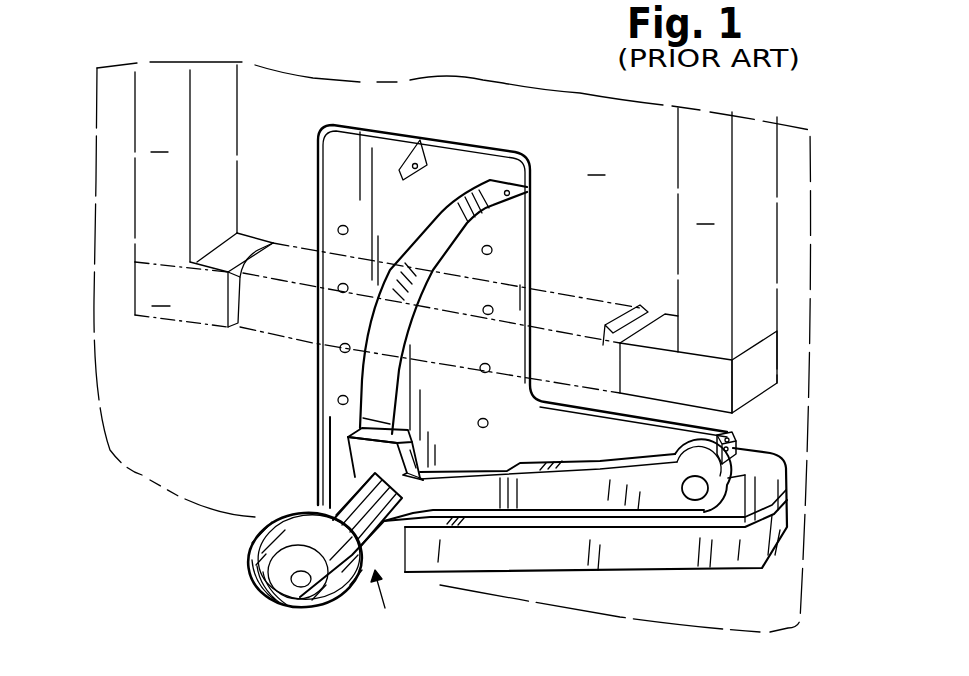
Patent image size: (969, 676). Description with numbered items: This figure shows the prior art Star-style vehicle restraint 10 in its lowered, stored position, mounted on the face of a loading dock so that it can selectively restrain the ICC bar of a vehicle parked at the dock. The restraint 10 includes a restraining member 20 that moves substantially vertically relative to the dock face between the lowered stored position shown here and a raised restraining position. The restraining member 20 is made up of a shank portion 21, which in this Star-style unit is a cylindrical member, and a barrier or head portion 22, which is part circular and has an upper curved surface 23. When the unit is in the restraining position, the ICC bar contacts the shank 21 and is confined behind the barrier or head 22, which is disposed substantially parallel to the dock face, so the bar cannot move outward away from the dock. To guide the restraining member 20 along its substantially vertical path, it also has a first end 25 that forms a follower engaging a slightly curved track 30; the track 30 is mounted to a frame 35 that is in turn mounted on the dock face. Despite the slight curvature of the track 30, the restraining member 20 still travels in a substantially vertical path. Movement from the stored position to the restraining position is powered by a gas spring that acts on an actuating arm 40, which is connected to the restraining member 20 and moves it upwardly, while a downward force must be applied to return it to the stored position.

The restraint 10 is at (176, 374).
The restraining member 20 is at (379, 604).
The shank portion 21 is at (385, 505).
The barrier or head portion 22 is at (258, 568).
The upper curved surface 23 is at (310, 527).
The first end 25 is at (420, 462).
The track 30 is at (497, 182).
The frame 35 is at (337, 140).
The actuating arm 40 is at (606, 492).